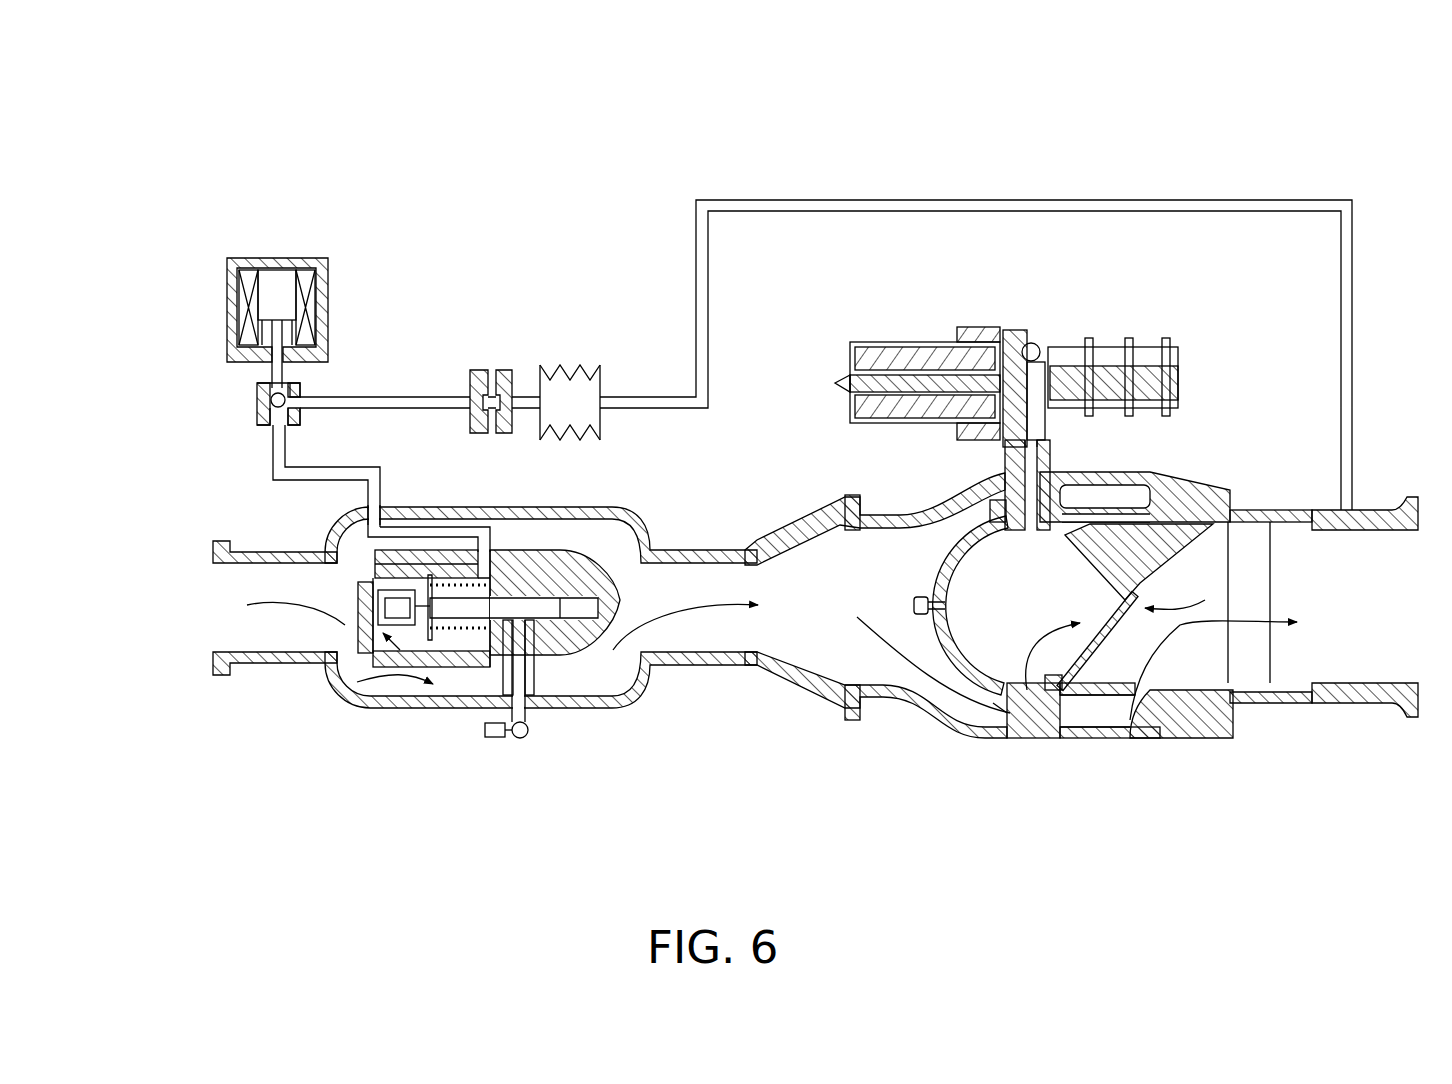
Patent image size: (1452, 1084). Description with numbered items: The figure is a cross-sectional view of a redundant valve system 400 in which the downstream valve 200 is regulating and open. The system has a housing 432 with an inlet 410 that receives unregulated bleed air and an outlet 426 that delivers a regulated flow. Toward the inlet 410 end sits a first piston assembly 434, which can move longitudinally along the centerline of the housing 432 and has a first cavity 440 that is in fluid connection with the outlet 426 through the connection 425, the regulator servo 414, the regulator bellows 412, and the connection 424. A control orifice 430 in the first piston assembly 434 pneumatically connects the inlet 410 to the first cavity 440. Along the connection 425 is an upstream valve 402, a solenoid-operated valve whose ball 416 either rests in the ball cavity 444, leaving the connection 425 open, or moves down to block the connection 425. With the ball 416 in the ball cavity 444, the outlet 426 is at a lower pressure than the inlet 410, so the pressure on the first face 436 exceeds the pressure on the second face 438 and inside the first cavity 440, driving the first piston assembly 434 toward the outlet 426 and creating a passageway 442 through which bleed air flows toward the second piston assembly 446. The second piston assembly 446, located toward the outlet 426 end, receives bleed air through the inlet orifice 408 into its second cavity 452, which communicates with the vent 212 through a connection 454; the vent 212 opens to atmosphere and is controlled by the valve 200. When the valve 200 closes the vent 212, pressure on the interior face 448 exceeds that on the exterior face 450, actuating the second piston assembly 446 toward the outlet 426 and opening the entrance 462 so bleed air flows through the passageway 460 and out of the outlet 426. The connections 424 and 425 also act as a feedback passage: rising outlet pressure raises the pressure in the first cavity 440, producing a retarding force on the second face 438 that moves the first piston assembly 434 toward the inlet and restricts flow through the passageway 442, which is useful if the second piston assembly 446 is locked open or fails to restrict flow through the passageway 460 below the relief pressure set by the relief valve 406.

The redundant valve system 400 is at (442, 138).
The upstream valve 402 is at (258, 258).
The ball cavity 444 is at (258, 395).
The ball 416 is at (286, 397).
The regulator servo 414 is at (483, 390).
The regulator bellows 412 is at (562, 377).
The connection 425 is at (273, 470).
The connection 424 is at (930, 200).
The first cavity 440 is at (455, 575).
The housing 432 is at (745, 540).
The control orifice 430 is at (352, 583).
The passageway 442 is at (367, 700).
The first piston assembly 434 is at (462, 667).
The second face 438 is at (407, 665).
The relief valve 406 is at (520, 740).
The inlet 410 is at (227, 612).
The first face 436 is at (342, 624).
The inlet orifice 408 is at (915, 605).
The connection 454 is at (1013, 475).
The second cavity 452 is at (1002, 615).
The exterior face 450 is at (1205, 600).
The outlet 426 is at (1388, 618).
The interior face 448 is at (1028, 703).
The second piston assembly 446 is at (1200, 738).
The entrance 462 is at (1140, 740).
The passageway 460 is at (1012, 733).
The valve 200 is at (1132, 318).
The vent 212 is at (1077, 365).